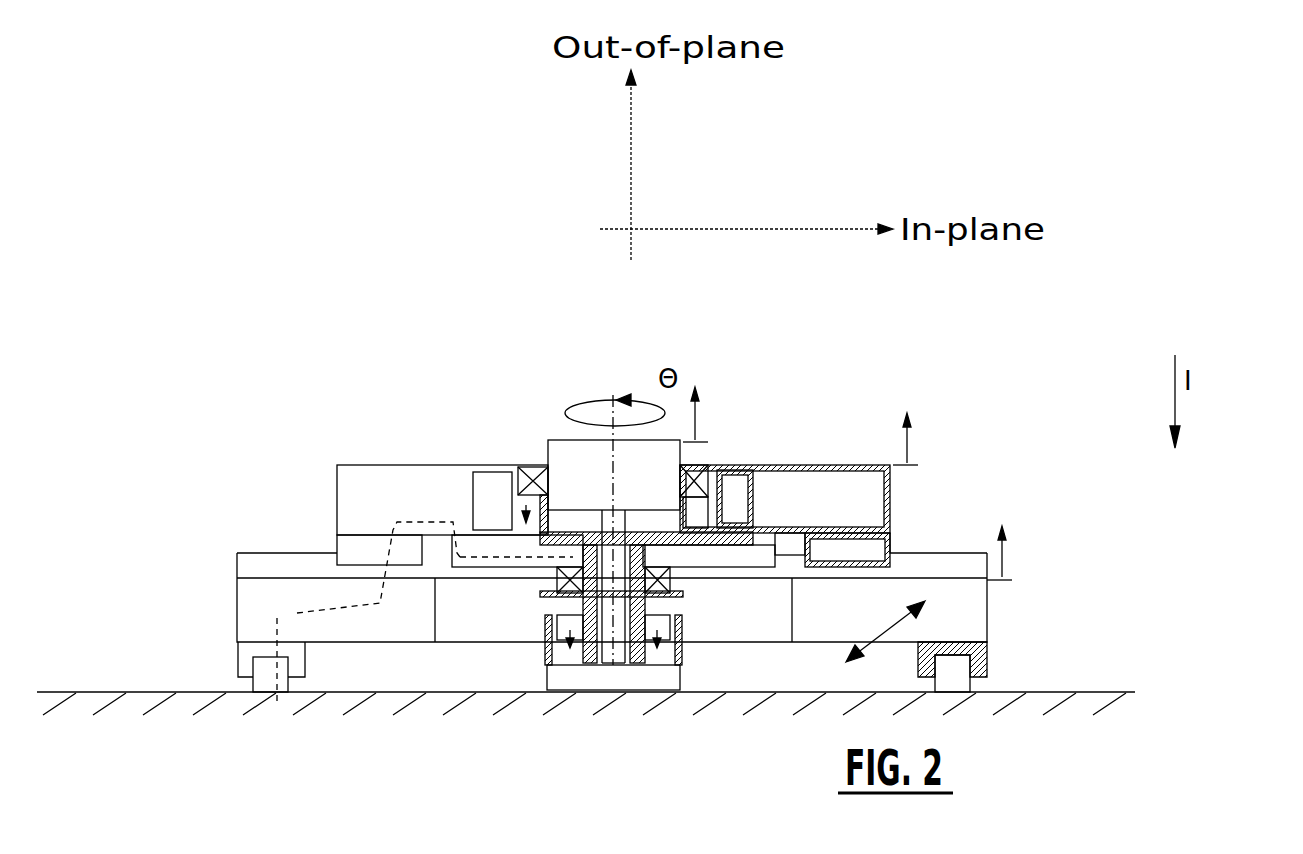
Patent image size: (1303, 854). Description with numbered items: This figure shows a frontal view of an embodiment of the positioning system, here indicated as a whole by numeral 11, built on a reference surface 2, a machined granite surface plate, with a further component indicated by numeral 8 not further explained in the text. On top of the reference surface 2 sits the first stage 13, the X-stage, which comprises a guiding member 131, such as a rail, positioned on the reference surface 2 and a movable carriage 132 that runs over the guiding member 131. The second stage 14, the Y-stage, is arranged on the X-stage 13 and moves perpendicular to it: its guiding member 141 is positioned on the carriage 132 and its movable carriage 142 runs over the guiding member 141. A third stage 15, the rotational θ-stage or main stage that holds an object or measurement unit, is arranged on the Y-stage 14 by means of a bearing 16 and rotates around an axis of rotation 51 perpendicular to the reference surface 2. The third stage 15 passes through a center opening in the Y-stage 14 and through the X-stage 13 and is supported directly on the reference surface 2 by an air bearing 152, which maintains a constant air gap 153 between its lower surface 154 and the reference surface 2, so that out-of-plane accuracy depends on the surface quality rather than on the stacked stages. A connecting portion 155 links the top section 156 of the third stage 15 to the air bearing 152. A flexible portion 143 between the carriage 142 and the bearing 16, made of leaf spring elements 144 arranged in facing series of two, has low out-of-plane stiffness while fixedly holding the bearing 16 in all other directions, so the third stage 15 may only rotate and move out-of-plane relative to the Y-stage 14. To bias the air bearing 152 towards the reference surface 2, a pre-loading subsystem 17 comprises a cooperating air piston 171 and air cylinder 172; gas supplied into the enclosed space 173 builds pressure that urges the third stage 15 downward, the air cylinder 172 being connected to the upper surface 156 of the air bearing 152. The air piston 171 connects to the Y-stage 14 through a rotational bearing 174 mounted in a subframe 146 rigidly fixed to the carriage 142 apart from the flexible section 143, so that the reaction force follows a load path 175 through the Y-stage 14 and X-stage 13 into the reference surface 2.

The reference surface 2 is at (93, 698).
The sensor 8 is at (483, 553).
The positioning device 11 is at (1052, 375).
The first stage 13 is at (907, 623).
The guiding member 131 is at (957, 673).
The movable carriage 132 is at (965, 600).
The second stage 14 is at (878, 513).
The guiding member 141 is at (972, 567).
The movable carriage 142 is at (875, 480).
The flexible portion 143 is at (497, 446).
The leaf spring elements 144 is at (497, 528).
The subframe 146 is at (757, 558).
The third stage 15 is at (745, 432).
The axis of rotation 51 is at (612, 412).
The air bearing 152 is at (637, 673).
The air gap 153 is at (670, 688).
The lower surface 154 is at (573, 690).
The connecting portion 155 is at (610, 523).
The top section 156 is at (668, 460).
The bearing 16 is at (705, 480).
The pre-loading subsystem 17 is at (522, 614).
The air piston 171 is at (565, 605).
The air cylinder 172 is at (545, 640).
The enclosed space 173 is at (573, 648).
The rotational bearing 174 is at (565, 578).
The load path 175 is at (297, 613).